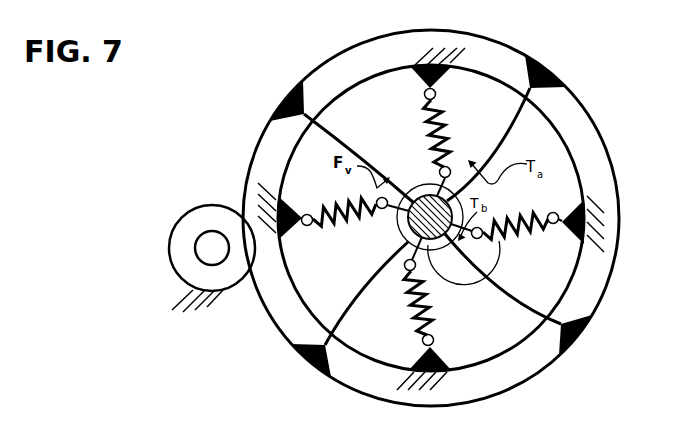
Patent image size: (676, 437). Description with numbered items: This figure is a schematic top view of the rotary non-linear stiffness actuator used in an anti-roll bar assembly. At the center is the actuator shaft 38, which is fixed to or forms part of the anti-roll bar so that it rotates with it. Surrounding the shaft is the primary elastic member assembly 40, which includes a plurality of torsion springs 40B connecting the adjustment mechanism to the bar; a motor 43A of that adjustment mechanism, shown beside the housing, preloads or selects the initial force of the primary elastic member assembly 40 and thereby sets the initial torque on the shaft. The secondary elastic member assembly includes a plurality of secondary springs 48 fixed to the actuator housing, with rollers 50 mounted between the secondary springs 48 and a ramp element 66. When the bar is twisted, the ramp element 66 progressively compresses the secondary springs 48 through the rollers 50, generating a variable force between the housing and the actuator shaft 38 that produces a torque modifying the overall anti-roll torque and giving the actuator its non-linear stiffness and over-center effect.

The actuator shaft 38 is at (465, 286).
The primary elastic member assembly 40 is at (504, 133).
The torsion springs 40B is at (354, 122).
The motor 43A is at (184, 206).
The secondary springs 48 is at (335, 193).
The rollers 50 is at (306, 226).
The ramp element 66 is at (438, 188).